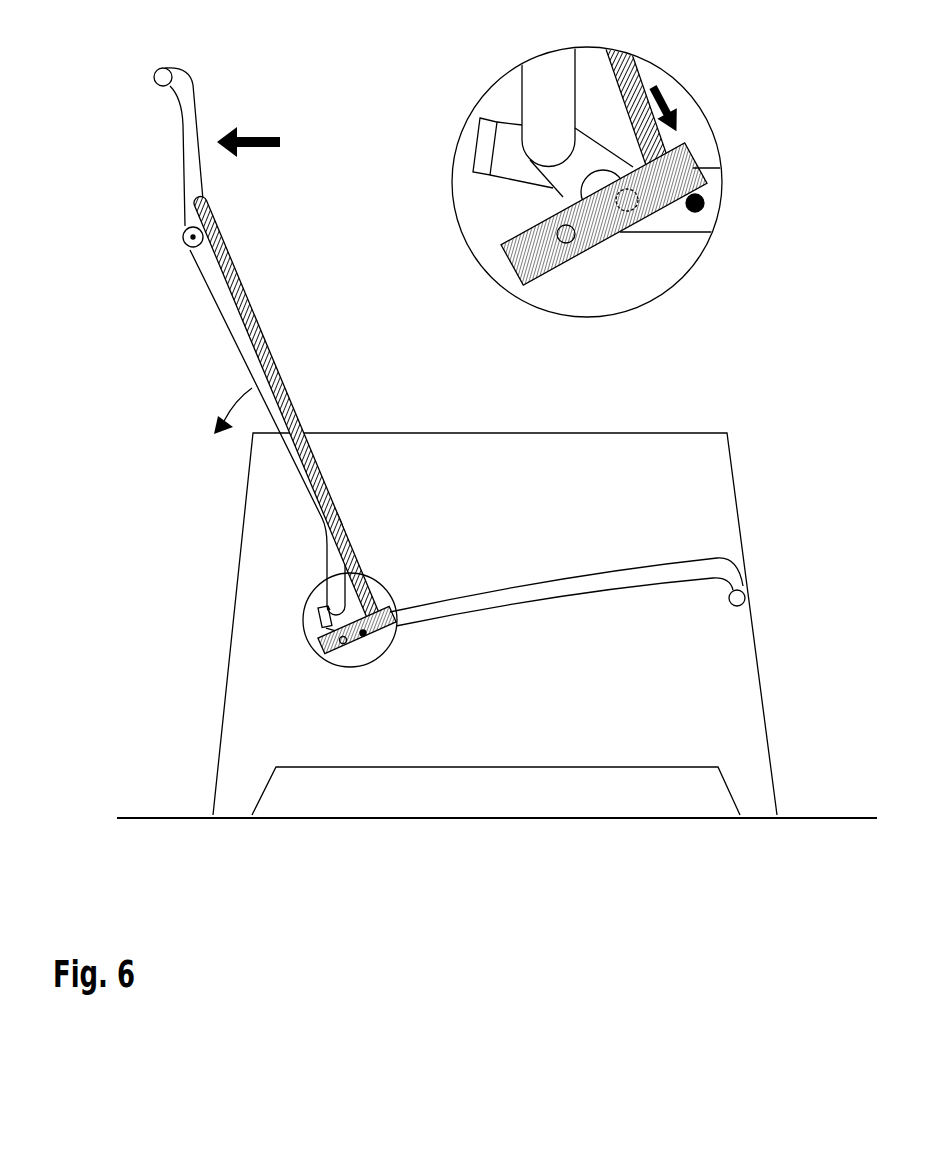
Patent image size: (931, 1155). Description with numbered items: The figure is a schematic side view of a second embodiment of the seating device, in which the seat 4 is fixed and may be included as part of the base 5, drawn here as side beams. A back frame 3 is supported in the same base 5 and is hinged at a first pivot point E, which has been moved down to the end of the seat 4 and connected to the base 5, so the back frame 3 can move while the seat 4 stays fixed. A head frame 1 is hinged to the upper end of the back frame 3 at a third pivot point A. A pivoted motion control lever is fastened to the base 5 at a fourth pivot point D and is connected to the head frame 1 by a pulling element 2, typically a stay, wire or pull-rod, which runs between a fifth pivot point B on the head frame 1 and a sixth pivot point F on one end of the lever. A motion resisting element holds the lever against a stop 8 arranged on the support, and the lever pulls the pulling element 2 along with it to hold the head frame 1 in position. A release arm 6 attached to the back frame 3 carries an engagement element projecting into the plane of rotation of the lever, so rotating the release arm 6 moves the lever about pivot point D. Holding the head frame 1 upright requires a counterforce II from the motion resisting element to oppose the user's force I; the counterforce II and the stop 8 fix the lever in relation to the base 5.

The head frame 1 is at (190, 155).
The pulling element 2 is at (228, 260).
The back frame 3 is at (260, 370).
The seat 4 is at (430, 625).
The base 5 is at (495, 624).
The release arm 6 is at (487, 150).
The stop 8 is at (694, 212).
The third pivot point A is at (185, 237).
The fifth pivot point B is at (205, 201).
The fourth pivot point D is at (567, 243).
The first pivot point E is at (627, 211).
The sixth pivot point F is at (670, 190).
The user's force I is at (248, 136).
The counterforce II is at (664, 109).